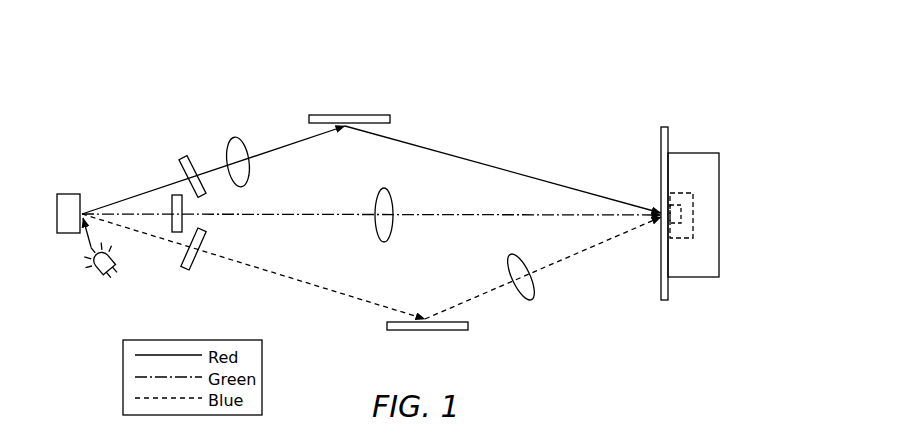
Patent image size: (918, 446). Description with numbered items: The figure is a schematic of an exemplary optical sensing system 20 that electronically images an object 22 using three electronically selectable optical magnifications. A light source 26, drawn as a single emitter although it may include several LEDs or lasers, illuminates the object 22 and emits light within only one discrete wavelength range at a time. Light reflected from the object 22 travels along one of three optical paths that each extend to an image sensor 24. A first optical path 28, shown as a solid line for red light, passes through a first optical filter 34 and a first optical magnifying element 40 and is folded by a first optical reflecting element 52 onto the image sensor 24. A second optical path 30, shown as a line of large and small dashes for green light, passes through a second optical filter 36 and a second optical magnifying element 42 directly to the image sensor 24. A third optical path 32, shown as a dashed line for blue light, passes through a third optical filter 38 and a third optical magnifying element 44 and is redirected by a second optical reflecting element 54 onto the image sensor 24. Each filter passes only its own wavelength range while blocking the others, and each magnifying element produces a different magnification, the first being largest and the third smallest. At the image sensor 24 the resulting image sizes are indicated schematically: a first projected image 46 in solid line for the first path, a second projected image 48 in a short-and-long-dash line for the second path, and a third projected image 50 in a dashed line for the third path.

The optical sensing system 20 is at (519, 126).
The object 22 is at (70, 194).
The image sensor 24 is at (665, 127).
The light source 26 is at (95, 274).
The first optical path 28 is at (433, 148).
The second optical path 30 is at (450, 213).
The third optical path 32 is at (302, 283).
The first optical filter 34 is at (187, 157).
The second optical filter 36 is at (177, 195).
The third optical filter 38 is at (187, 270).
The first optical magnifying element 40 is at (232, 137).
The second optical magnifying element 42 is at (385, 188).
The third optical magnifying element 44 is at (523, 303).
The first projected image 46 is at (708, 153).
The second projected image 48 is at (693, 200).
The third projected image 50 is at (681, 215).
The first optical reflecting element 52 is at (323, 115).
The second optical reflecting element 54 is at (436, 331).